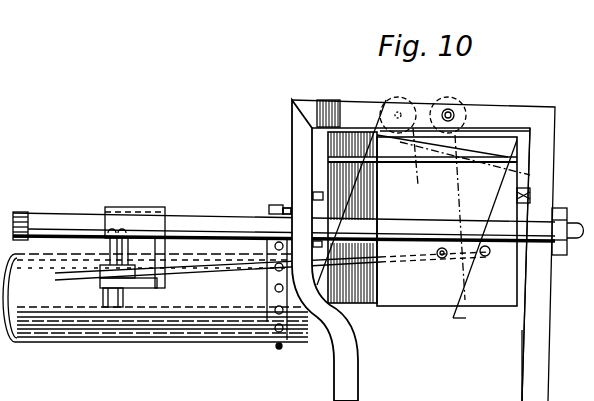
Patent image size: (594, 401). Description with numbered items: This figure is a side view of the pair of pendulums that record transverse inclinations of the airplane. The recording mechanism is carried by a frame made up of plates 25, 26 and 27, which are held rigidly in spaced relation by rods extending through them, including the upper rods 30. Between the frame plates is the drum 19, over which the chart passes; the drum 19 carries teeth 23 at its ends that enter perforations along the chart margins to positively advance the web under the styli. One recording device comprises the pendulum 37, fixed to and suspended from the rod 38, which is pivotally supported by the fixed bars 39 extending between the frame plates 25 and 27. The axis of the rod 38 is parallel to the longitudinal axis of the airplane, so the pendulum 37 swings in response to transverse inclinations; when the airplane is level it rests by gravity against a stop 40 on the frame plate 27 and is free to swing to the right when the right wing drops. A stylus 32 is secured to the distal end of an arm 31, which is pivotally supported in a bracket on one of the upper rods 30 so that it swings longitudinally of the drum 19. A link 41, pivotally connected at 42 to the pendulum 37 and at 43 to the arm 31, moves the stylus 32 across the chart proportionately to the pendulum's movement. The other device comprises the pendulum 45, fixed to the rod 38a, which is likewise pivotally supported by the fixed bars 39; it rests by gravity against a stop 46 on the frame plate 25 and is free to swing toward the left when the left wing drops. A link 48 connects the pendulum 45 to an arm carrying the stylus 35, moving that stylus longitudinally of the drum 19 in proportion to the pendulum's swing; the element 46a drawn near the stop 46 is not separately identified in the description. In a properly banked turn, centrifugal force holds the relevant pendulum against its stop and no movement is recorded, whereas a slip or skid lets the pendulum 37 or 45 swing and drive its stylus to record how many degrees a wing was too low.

The drum 19 is at (218, 341).
The teeth 23 is at (277, 348).
The frame-plate 25 is at (358, 368).
The frame-plate 26 is at (6, 211).
The frame-plate 27 is at (548, 351).
The upper rods 30 is at (215, 221).
The arm 31 is at (125, 251).
The stylus 32 is at (147, 212).
The stylus 35 is at (100, 281).
The pendulum 37 is at (527, 300).
The rod 38 is at (449, 109).
The rod 38a is at (401, 110).
The fixed bars 39 is at (511, 112).
The stop 40 is at (536, 189).
The link 41 is at (228, 273).
The pivotal connection 42 is at (488, 254).
The pivotal connection 43 is at (127, 273).
The pendulum 45 is at (341, 128).
The stop 46 is at (296, 181).
The collar pin 46a is at (442, 259).
The link 48 is at (270, 268).